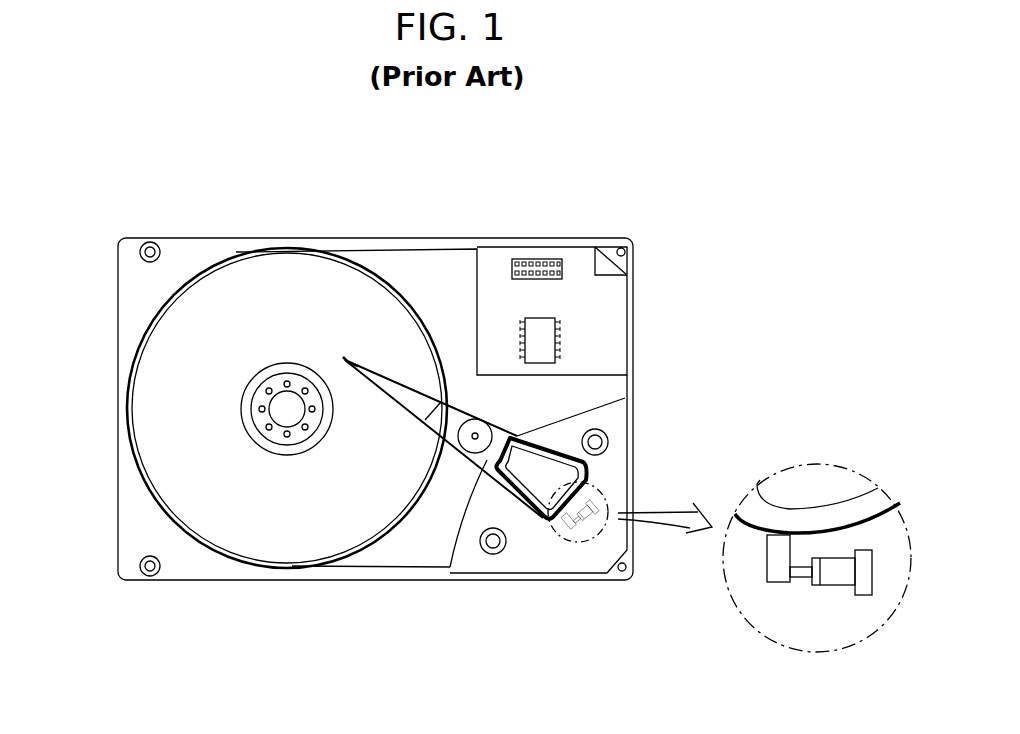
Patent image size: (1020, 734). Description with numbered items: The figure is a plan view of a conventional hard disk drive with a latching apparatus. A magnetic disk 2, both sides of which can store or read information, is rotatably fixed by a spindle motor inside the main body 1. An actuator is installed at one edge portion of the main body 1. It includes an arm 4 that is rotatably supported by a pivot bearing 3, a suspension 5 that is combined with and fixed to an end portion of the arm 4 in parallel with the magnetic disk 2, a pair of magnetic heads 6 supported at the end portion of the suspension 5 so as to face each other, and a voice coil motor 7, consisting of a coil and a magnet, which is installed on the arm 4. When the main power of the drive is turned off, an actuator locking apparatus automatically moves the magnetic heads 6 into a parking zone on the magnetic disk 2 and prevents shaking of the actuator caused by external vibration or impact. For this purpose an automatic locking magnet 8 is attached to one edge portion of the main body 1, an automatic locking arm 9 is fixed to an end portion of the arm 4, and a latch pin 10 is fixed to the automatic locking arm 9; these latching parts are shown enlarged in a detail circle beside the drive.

The main body 1 is at (135, 297).
The magnetic disk 2 is at (150, 403).
The pivot bearing 3 is at (484, 424).
The arm 4 is at (482, 460).
The suspension 5 is at (418, 396).
The magnetic heads 6 is at (347, 358).
The voice coil motor 7 is at (590, 470).
The automatic locking magnet 8 is at (840, 582).
The automatic locking arm 9 is at (778, 582).
The latch pin 10 is at (817, 585).